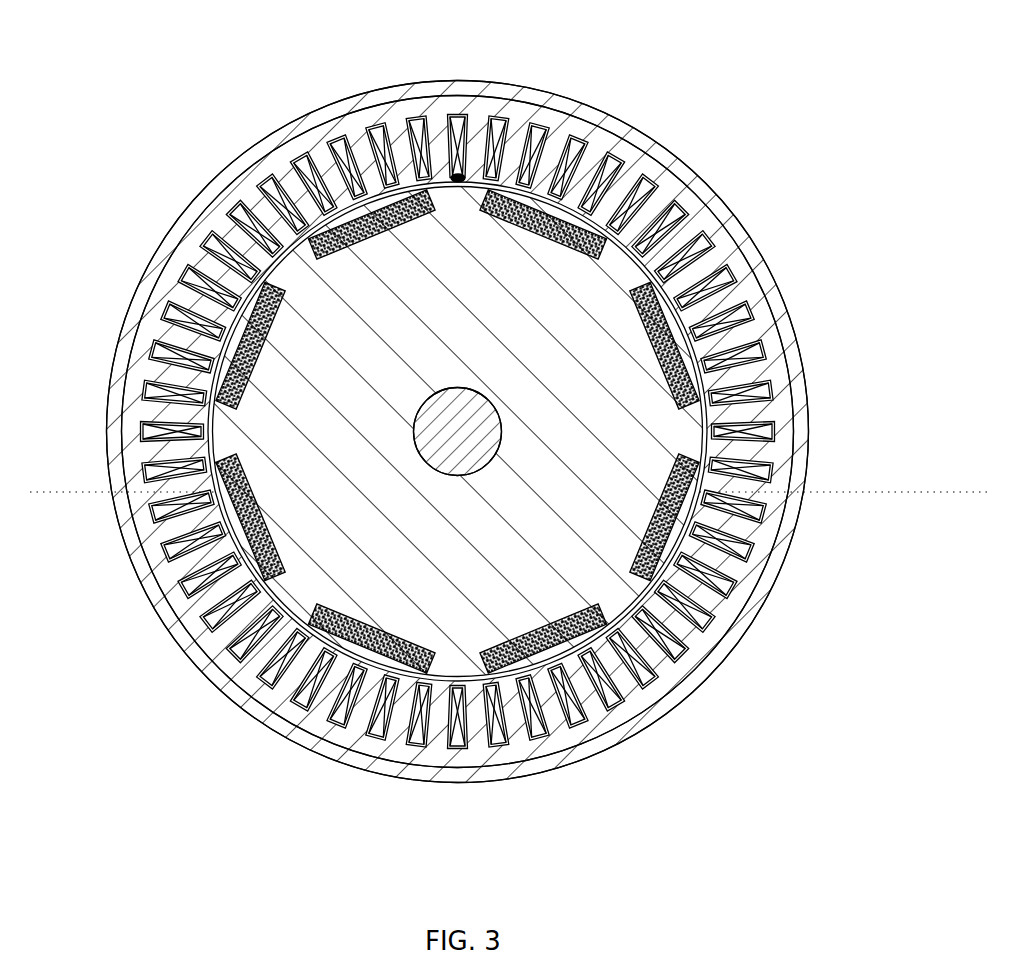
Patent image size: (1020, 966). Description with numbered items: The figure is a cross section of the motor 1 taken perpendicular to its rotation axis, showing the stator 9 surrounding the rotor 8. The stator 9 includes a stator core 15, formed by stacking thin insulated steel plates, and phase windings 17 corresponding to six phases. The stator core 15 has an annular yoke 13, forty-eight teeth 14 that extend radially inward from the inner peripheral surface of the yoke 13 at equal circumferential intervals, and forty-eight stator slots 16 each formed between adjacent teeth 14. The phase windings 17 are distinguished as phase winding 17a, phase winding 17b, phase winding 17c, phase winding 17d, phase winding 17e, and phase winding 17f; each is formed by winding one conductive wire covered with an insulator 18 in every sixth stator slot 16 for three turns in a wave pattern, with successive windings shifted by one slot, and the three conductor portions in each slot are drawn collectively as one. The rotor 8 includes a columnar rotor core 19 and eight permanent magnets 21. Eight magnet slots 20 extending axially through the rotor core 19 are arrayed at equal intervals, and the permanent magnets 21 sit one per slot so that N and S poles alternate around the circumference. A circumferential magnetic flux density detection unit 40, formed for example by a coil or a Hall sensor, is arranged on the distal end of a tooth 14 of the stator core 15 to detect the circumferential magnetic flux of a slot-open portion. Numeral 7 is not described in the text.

The motor 1 is at (805, 582).
The shaft 7 is at (418, 478).
The rotor 8 is at (656, 422).
The stator 9 is at (600, 126).
The yoke 13 is at (243, 162).
The teeth 14 is at (345, 158).
The stator core 15 is at (188, 231).
The stator slots 16 is at (750, 380).
The phase windings 17 is at (210, 443).
The phase winding 17a is at (648, 186).
The phase winding 17b is at (612, 152).
The phase winding 17c is at (576, 128).
The phase winding 17d is at (537, 122).
The phase winding 17e is at (493, 118).
The phase winding 17f is at (452, 118).
The insulator 18 is at (688, 655).
The rotor core 19 is at (318, 541).
The magnet slots 20 is at (535, 700).
The permanent magnets 21 is at (616, 182).
The circumferential magnetic flux density detection unit 40 is at (456, 174).